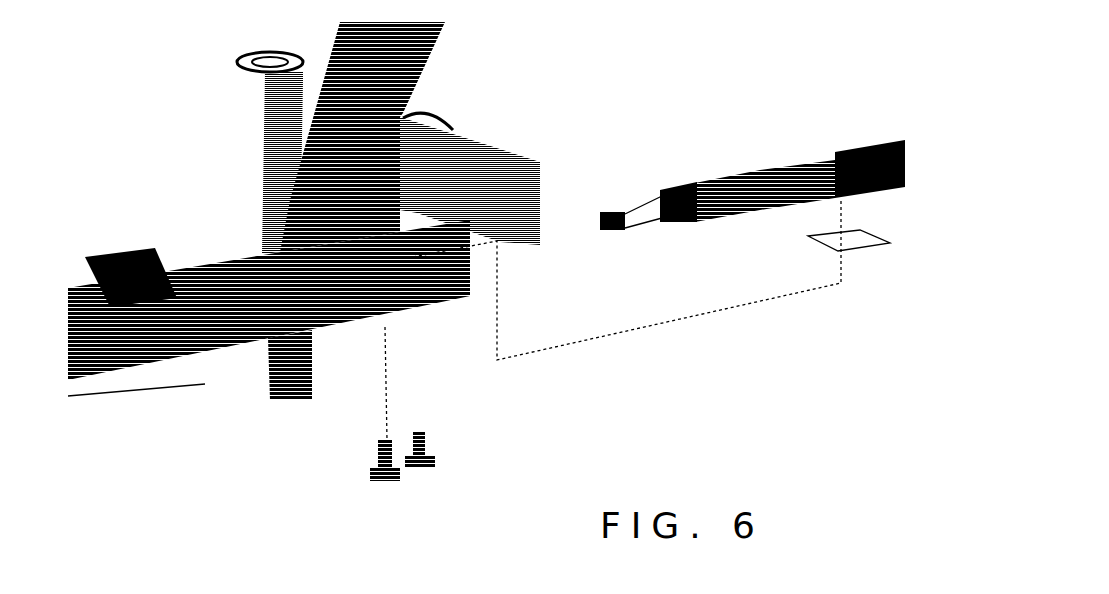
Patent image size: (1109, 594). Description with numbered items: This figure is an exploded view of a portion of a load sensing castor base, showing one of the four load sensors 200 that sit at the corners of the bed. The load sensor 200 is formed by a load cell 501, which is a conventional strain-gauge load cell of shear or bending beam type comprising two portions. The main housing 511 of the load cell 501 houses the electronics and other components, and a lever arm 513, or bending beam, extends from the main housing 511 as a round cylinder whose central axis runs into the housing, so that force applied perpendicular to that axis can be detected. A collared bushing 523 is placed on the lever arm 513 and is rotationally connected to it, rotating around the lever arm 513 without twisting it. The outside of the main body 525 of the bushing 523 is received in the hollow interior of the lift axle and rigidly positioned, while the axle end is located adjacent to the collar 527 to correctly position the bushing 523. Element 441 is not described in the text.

The load sensor 200 is at (644, 77).
The mounting rail 441 is at (203, 380).
The load cell 501 is at (770, 133).
The main housing 511 is at (820, 147).
The lever arm 513 is at (708, 183).
The bushing 523 is at (278, 310).
The main body 525 is at (245, 258).
The collar 527 is at (317, 317).